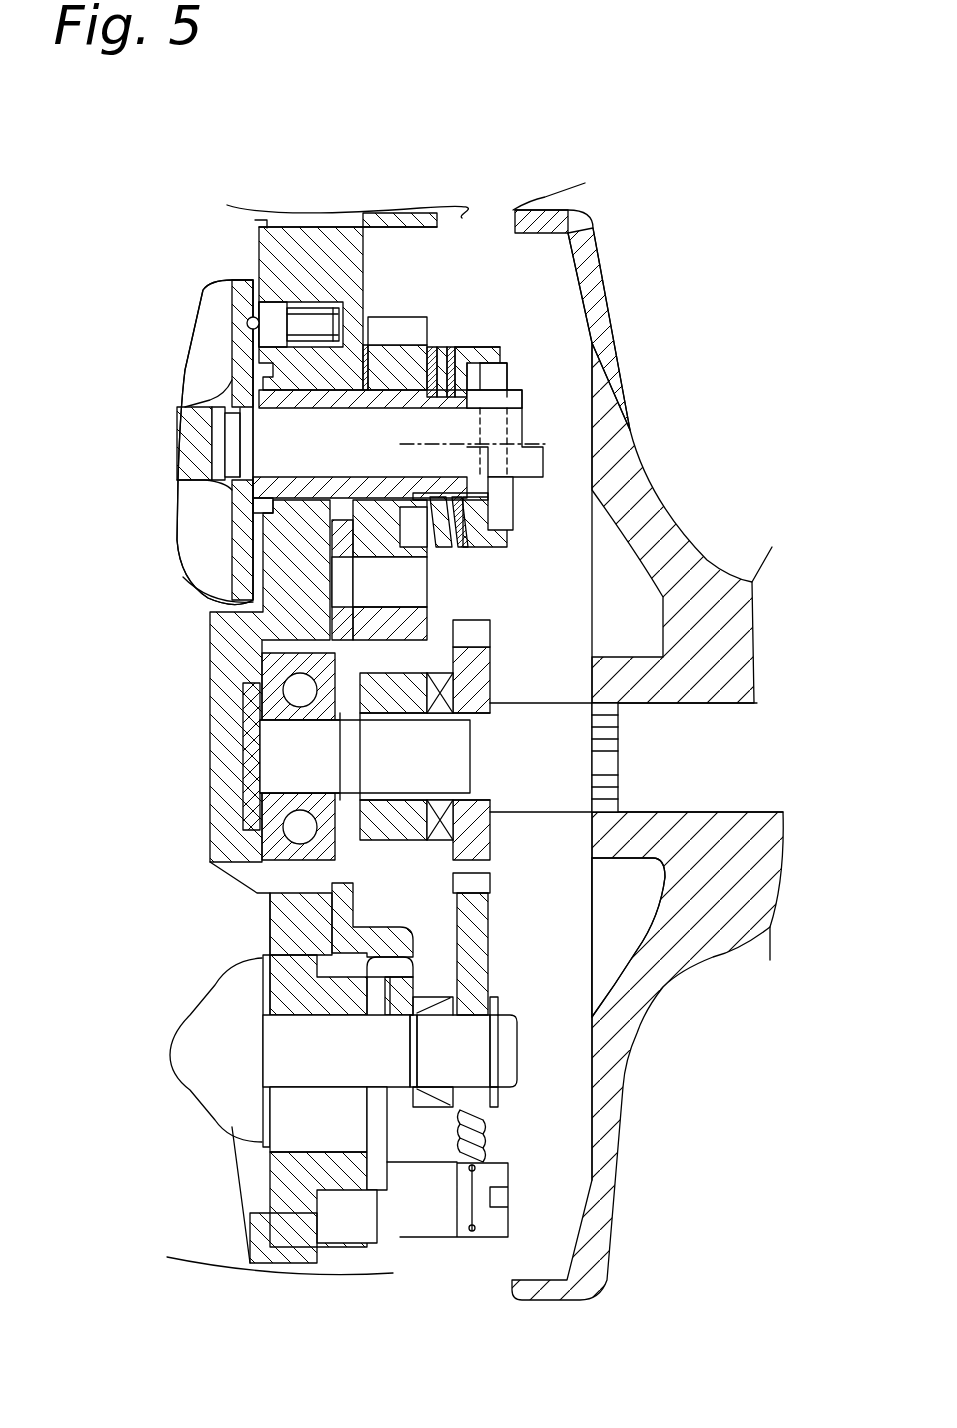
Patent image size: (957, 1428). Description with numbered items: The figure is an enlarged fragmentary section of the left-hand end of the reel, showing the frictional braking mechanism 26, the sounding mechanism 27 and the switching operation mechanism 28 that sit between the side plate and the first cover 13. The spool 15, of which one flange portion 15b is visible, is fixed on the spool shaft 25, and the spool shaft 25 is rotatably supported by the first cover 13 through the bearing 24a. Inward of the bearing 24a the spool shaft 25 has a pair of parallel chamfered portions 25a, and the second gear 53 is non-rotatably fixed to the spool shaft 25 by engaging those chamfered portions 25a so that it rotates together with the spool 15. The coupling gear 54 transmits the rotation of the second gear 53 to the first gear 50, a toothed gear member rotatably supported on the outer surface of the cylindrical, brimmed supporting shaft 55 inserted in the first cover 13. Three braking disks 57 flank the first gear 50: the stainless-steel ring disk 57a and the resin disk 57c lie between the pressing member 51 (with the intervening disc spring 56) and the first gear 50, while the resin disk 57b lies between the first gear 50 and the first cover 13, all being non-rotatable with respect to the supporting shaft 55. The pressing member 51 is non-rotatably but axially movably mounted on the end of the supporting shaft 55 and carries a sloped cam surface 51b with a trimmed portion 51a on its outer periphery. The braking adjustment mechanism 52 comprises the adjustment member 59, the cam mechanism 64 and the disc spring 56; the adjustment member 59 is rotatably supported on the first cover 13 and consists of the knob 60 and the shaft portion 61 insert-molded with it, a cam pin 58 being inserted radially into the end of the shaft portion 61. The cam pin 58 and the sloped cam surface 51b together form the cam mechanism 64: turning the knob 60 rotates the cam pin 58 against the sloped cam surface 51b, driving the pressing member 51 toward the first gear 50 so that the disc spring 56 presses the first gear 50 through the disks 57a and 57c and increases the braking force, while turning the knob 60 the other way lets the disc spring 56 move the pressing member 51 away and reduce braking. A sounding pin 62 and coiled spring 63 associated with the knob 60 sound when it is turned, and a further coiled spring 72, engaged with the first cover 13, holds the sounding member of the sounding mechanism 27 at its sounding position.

The first cover 13 is at (228, 808).
The spool 15 is at (688, 532).
The flange portion 15b is at (620, 352).
The bearing 24a is at (280, 663).
The spool shaft 25 is at (742, 785).
The chamfered portions 25a is at (470, 822).
The frictional braking mechanism 26 is at (438, 330).
The sounding mechanism 27 is at (500, 877).
The switching operation mechanism 28 is at (193, 1013).
The first gear 50 is at (398, 325).
The pressing member 51 is at (453, 345).
The trimmed portion 51a is at (493, 348).
The sloped cam surface 51b is at (478, 397).
The braking adjustment mechanism 52 is at (378, 330).
The second gear 53 is at (385, 853).
The coupling gear 54 is at (430, 553).
The supporting shaft 55 is at (275, 320).
The disc spring 56 is at (537, 573).
The braking disks 57 is at (480, 503).
The braking disk 57a is at (453, 345).
The braking disk 57b is at (442, 345).
The braking disk 57c is at (450, 345).
The cam pin 58 is at (507, 517).
The adjustment member 59 is at (183, 577).
The knob 60 is at (192, 527).
The shaft portion 61 is at (268, 452).
The sounding pin 62 is at (250, 265).
The coiled spring 63 is at (340, 320).
The cam mechanism 64 is at (485, 350).
The coiled spring 72 is at (483, 1130).